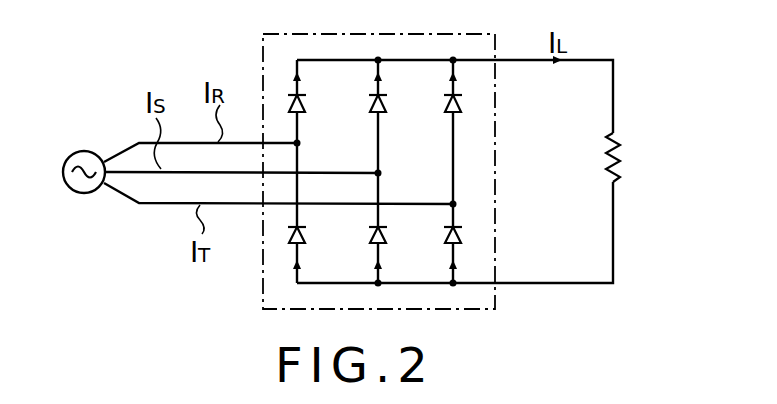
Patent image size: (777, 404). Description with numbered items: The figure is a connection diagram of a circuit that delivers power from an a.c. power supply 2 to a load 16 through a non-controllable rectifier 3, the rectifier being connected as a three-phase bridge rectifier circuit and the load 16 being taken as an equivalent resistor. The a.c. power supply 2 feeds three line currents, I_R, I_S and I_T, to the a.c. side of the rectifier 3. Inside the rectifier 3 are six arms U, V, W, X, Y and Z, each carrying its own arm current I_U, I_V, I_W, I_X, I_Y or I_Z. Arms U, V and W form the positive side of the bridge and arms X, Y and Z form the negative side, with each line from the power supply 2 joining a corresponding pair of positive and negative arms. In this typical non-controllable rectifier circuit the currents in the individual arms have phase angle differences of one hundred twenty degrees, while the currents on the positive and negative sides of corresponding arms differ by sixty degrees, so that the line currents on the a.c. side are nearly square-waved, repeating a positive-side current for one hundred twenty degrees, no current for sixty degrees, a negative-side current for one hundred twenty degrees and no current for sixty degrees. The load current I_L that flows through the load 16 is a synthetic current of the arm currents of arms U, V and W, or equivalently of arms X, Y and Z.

The a.c. power supply 2 is at (88, 150).
The non-controllable rectifier 3 is at (438, 154).
The load 16 is at (624, 152).
The arm U is at (305, 101).
The arm V is at (386, 101).
The arm W is at (461, 101).
The arm X is at (307, 228).
The arm Y is at (388, 228).
The arm Z is at (462, 224).